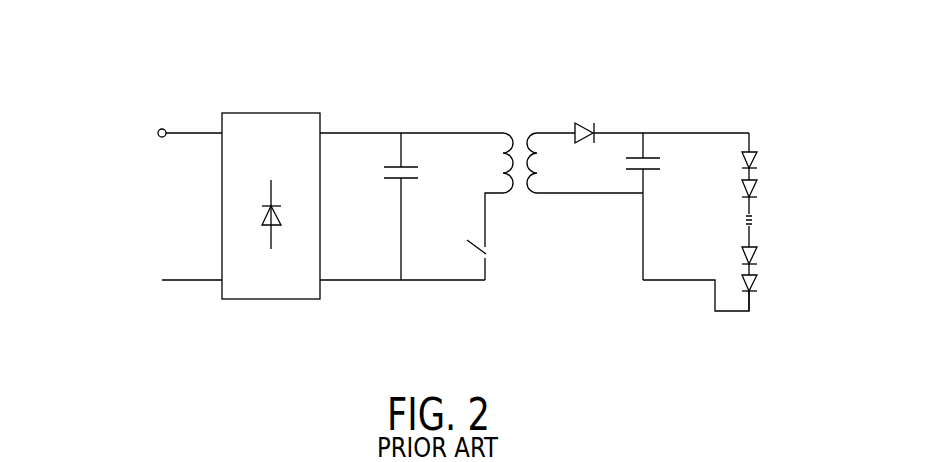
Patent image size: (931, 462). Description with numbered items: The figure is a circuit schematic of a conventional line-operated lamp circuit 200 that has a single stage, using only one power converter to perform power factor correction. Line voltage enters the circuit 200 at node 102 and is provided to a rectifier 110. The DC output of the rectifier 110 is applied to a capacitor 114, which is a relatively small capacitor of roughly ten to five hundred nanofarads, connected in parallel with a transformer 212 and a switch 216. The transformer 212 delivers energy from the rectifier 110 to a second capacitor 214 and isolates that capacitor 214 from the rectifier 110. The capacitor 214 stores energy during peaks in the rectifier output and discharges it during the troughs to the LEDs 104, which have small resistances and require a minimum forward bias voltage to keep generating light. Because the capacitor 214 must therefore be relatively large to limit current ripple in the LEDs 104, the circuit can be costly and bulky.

The circuit 200 is at (90, 80).
The node 102 is at (164, 128).
The rectifier 110 is at (268, 113).
The capacitor 114 is at (408, 167).
The transformer 212 is at (510, 140).
The switch 216 is at (486, 254).
The capacitor 214 is at (652, 158).
The LEDs 104 is at (768, 150).